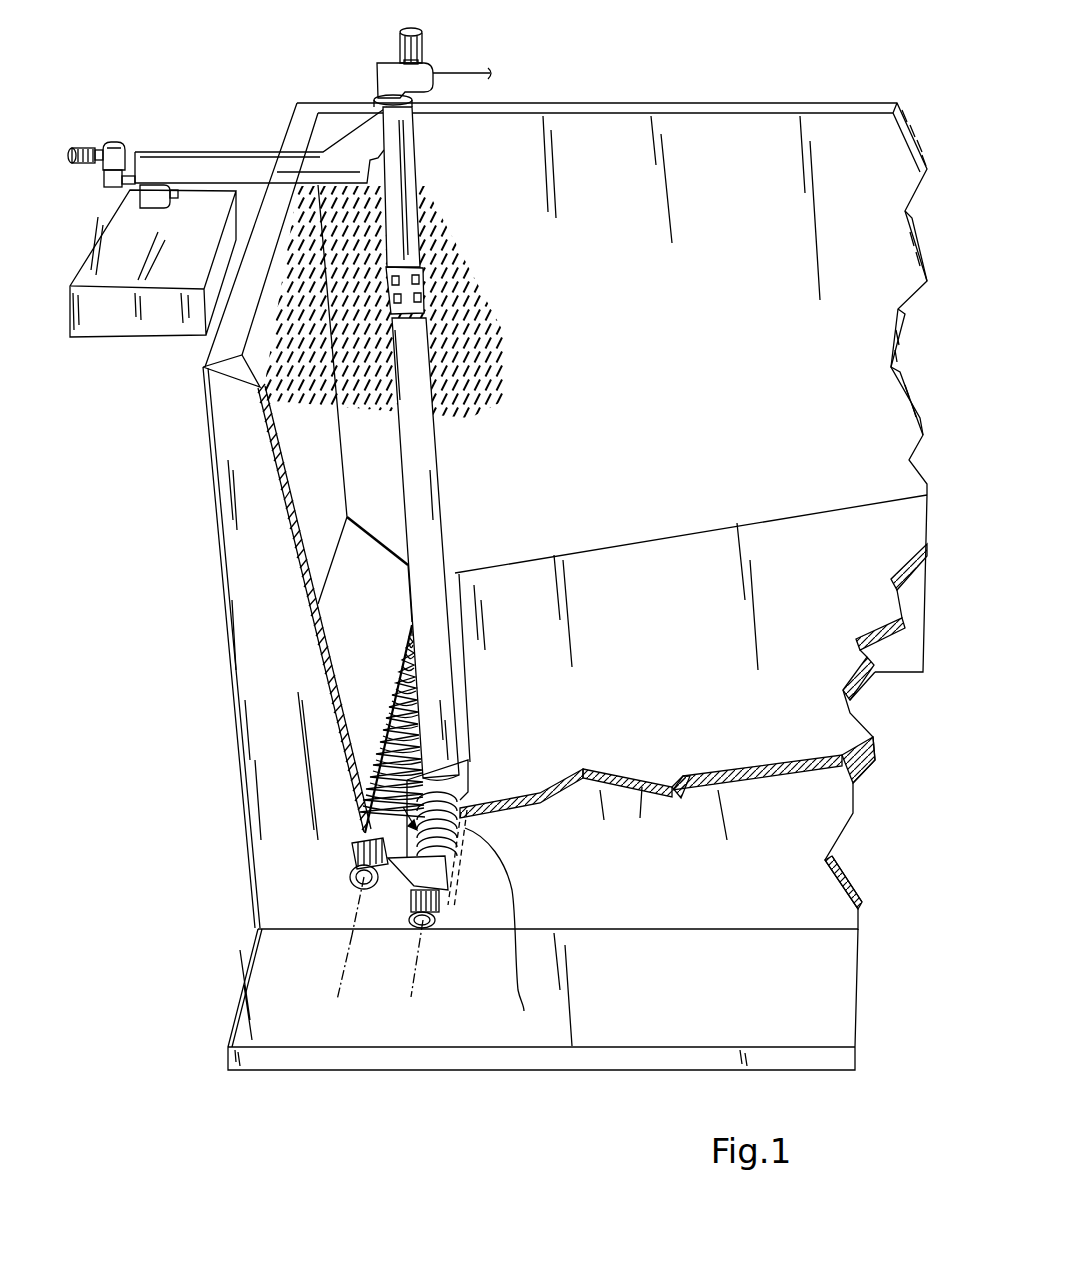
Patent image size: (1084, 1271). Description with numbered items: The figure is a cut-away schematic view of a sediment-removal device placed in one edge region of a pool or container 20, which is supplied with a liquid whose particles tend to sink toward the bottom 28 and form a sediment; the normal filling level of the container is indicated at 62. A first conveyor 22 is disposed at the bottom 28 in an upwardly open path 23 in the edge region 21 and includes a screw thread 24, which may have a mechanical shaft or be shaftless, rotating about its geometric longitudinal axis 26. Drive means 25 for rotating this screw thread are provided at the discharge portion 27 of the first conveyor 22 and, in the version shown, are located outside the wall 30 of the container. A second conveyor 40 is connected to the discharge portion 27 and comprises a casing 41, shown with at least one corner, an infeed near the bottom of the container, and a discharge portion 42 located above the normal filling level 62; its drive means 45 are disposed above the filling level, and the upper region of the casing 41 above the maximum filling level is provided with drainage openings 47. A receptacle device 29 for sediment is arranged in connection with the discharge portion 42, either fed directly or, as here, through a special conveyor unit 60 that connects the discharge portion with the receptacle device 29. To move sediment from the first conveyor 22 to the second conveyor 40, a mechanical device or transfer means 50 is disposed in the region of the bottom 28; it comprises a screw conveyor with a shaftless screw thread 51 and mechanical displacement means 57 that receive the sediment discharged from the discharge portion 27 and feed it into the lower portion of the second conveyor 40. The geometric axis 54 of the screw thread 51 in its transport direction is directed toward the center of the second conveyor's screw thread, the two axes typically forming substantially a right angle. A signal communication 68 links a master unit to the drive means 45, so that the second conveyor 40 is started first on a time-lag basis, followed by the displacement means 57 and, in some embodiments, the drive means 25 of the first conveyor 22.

The pool (container) 20 is at (217, 765).
The edge region 21 is at (458, 572).
The first conveyor 22 is at (377, 770).
The upwardly open path 23 is at (392, 667).
The screw thread 24 is at (390, 697).
The drive means 25 is at (363, 880).
The geometric longitudinal axis 26 is at (340, 968).
The discharge portion 27 is at (360, 837).
The bottom 28 is at (688, 766).
The receptacle device 29 is at (152, 322).
The wall 30 is at (253, 590).
The second conveyor 40 is at (442, 452).
The casing 41 is at (417, 224).
The discharge portion 42 is at (408, 154).
The drive means 45 is at (427, 52).
The drainage openings 47 is at (430, 284).
The mechanical device or transfer means 50 is at (395, 905).
The screw thread 51 is at (457, 847).
The geometric axis 54 is at (411, 976).
The mechanical displacement means 57 is at (524, 1011).
The special conveyor unit 60 is at (224, 152).
The normal filling level 62 is at (288, 422).
The signal communication 68 is at (490, 73).